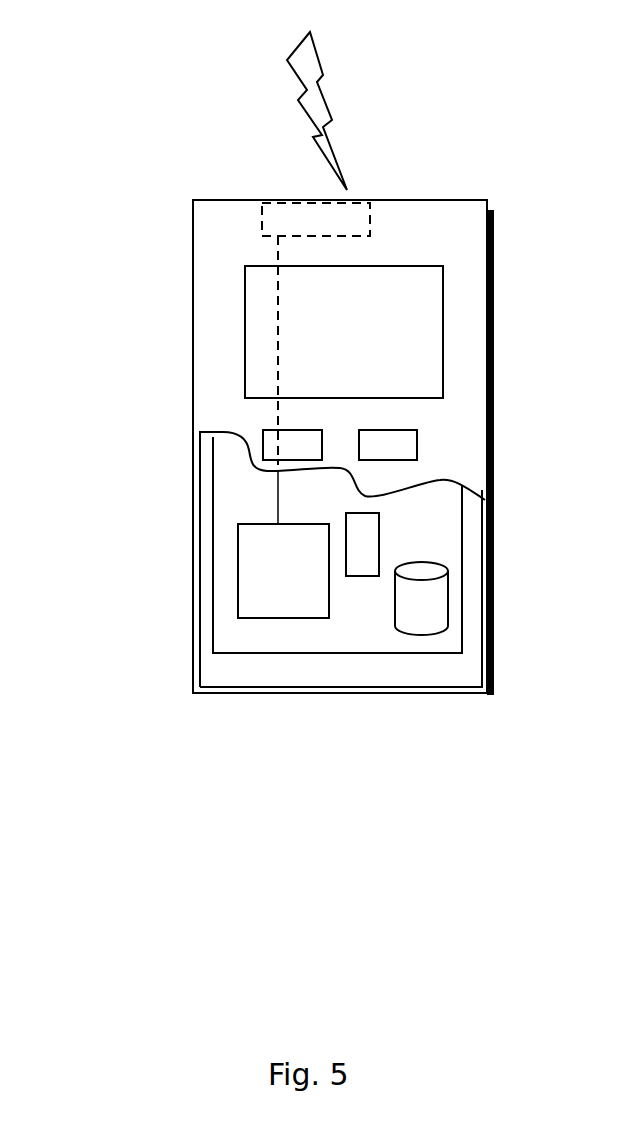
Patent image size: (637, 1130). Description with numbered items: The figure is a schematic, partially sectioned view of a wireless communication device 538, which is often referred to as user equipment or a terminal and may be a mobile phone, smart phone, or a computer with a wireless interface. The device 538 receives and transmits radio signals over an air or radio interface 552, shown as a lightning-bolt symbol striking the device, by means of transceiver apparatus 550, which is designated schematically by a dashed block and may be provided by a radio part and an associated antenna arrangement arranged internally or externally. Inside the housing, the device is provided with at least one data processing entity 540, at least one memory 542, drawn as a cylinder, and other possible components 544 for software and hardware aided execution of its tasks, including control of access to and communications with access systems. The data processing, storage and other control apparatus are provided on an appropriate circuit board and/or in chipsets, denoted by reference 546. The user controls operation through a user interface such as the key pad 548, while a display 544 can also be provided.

The communication device 538 is at (193, 240).
The data processing entity 540 is at (245, 555).
The memory 542 is at (415, 611).
The other possible components / display 544 is at (260, 318).
The circuit board and/or chipsets 546 is at (237, 637).
The key pad 548 is at (263, 448).
The transceiver apparatus 550 is at (360, 213).
The air or radio interface 552 is at (352, 128).